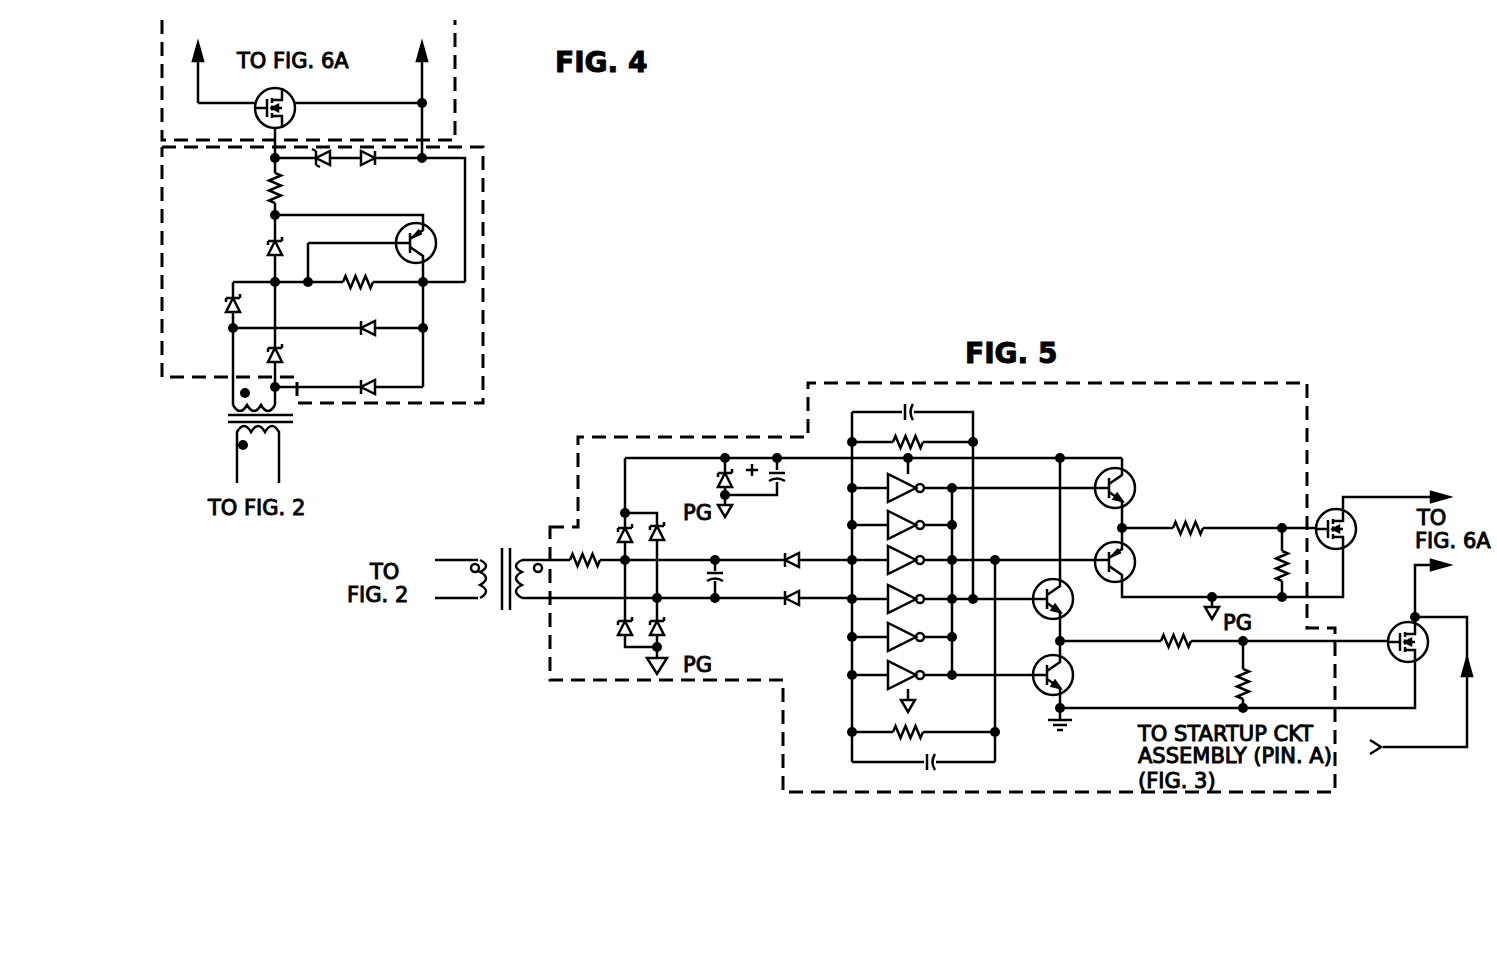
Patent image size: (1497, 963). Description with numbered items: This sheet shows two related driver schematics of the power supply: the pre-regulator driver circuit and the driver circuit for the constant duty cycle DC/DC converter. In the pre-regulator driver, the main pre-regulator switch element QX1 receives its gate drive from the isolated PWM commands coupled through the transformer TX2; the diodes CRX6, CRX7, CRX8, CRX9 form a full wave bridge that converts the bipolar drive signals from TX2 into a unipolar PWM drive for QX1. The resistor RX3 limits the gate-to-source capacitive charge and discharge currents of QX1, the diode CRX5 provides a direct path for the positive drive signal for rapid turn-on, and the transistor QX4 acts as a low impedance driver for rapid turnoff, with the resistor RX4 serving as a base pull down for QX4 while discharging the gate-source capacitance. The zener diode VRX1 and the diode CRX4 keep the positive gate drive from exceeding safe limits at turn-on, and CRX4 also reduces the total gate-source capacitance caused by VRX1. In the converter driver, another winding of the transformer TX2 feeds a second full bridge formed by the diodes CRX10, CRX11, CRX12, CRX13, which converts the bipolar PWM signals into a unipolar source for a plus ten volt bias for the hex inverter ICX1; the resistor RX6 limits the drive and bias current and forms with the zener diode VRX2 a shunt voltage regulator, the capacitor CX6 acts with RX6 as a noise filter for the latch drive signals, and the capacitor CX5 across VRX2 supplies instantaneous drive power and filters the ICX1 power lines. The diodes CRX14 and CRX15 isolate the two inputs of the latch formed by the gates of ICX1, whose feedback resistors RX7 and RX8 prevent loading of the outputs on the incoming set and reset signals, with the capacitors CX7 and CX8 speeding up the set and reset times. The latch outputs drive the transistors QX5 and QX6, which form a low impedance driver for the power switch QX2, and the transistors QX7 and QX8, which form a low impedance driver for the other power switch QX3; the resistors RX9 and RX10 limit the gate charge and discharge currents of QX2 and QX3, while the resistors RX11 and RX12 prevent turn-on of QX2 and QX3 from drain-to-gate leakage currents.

In FIG. 4, the main pre-regulator switch element QX1 is at (345, 131).
In FIG. 4, the gate resistor RX3 is at (242, 188).
In FIG. 4, the zener diode VRX1 is at (318, 174).
In FIG. 4, the diode CRX4 is at (377, 164).
In FIG. 4, the low impedance driver transistor QX4 is at (436, 243).
In FIG. 4, the diode CRX5 is at (235, 249).
In FIG. 4, the base pull down resistor RX4 is at (346, 271).
In FIG. 4, the bridge diode CRX6 is at (201, 306).
In FIG. 4, the bridge diode CRX7 is at (358, 317).
In FIG. 4, the bridge diode CRX8 is at (309, 357).
In FIG. 4, the bridge diode CRX9 is at (383, 375).
In FIG. 4, the drive transformer TX2 is at (211, 435).
In FIG. 5, the drive transformer TX2 is at (499, 591).
In FIG. 5, the drive/bias current limit resistor RX6 is at (583, 546).
In FIG. 5, the bridge diode CRX10 is at (617, 533).
In FIG. 5, the bridge diode CRX11 is at (697, 538).
In FIG. 5, the bridge diode CRX12 is at (593, 619).
In FIG. 5, the bridge diode CRX13 is at (695, 621).
In FIG. 5, the isolation diode CRX14 is at (792, 615).
In FIG. 5, the isolation diode CRX15 is at (792, 548).
In FIG. 5, the zener diode VRX2 is at (686, 483).
In FIG. 5, the capacitor CX5 is at (801, 491).
In FIG. 5, the capacitor CX6 is at (694, 577).
In FIG. 5, the speed-up capacitor CX7 is at (881, 404).
In FIG. 5, the speed-up capacitor CX8 is at (958, 772).
In FIG. 5, the feedback resistor RX7 is at (912, 430).
In FIG. 5, the feedback resistor RX8 is at (923, 721).
In FIG. 5, the hex inverter integrated circuit ICX1 is at (826, 589).
In FIG. 5, the driver transistor QX5 is at (1143, 488).
In FIG. 5, the driver transistor QX6 is at (1099, 550).
In FIG. 5, the driver transistor QX7 is at (1036, 591).
In FIG. 5, the driver transistor QX8 is at (1076, 675).
In FIG. 5, the gate resistor RX9 is at (1196, 513).
In FIG. 5, the gate resistor RX10 is at (1185, 655).
In FIG. 5, the gate bleed resistor RX11 is at (1252, 562).
In FIG. 5, the gate bleed resistor RX12 is at (1275, 684).
In FIG. 5, the power switch QX2 is at (1360, 536).
In FIG. 5, the power switch QX3 is at (1386, 658).